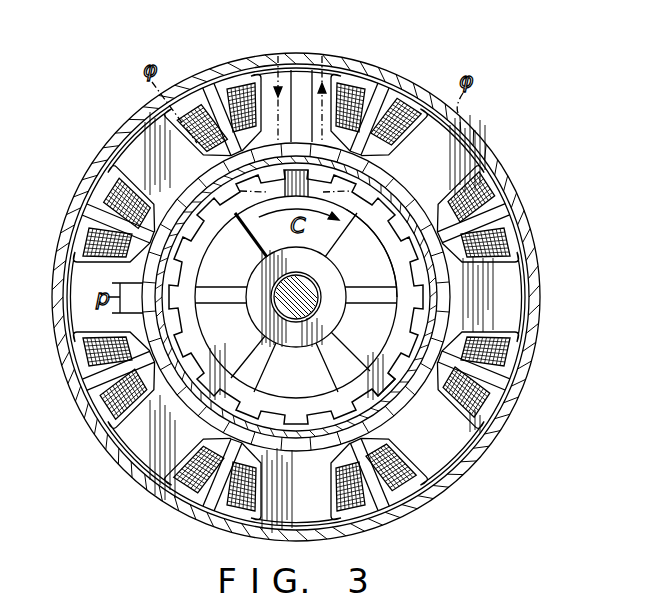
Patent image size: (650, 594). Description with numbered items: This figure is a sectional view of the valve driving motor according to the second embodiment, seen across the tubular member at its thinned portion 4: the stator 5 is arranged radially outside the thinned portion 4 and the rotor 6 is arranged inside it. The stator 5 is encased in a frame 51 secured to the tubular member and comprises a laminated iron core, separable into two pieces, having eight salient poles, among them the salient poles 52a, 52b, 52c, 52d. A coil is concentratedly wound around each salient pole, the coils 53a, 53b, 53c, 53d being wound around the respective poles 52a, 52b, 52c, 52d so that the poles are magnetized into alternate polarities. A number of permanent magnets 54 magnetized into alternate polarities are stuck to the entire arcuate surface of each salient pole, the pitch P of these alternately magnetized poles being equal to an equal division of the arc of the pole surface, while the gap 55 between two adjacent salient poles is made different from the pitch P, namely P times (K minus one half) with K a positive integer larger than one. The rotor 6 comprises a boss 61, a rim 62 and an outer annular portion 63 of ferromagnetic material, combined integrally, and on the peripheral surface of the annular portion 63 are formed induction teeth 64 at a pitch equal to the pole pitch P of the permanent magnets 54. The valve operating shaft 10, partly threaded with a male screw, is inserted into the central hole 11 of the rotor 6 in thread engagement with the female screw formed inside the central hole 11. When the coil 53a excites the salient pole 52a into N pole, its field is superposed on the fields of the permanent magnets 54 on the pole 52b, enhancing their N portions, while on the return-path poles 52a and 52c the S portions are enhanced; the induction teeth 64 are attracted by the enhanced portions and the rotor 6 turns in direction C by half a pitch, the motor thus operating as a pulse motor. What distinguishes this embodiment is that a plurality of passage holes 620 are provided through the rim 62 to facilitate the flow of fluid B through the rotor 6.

The thinned portion 4 is at (140, 268).
The stator 5 is at (83, 192).
The rotor 6 is at (213, 322).
The valve operating shaft 10 is at (268, 284).
The central hole 11 is at (333, 276).
The frame 51 is at (538, 258).
The salient pole 52a is at (135, 150).
The salient pole 52b is at (327, 64).
The salient pole 52c is at (448, 147).
The salient pole 52d is at (512, 290).
The concentrated coil 53a is at (113, 180).
The concentrated coil 53b is at (357, 97).
The concentrated coil 53c is at (487, 196).
The concentrated coil 53d is at (505, 353).
The permanent magnets 54 is at (278, 60).
The gap 55 is at (175, 96).
The boss 61 is at (289, 348).
The rim 62 is at (250, 368).
The outer annular portion 63 is at (298, 440).
The induction teeth 64 is at (383, 385).
The passage holes 620 is at (368, 240).